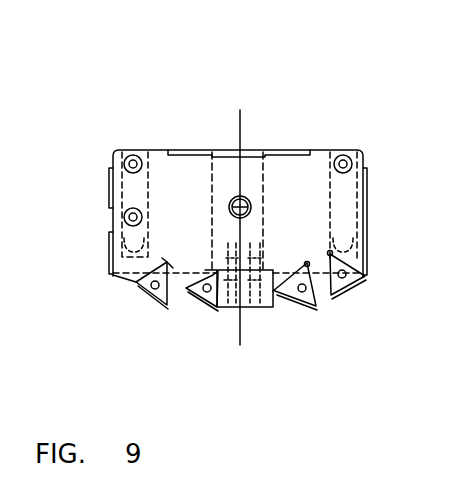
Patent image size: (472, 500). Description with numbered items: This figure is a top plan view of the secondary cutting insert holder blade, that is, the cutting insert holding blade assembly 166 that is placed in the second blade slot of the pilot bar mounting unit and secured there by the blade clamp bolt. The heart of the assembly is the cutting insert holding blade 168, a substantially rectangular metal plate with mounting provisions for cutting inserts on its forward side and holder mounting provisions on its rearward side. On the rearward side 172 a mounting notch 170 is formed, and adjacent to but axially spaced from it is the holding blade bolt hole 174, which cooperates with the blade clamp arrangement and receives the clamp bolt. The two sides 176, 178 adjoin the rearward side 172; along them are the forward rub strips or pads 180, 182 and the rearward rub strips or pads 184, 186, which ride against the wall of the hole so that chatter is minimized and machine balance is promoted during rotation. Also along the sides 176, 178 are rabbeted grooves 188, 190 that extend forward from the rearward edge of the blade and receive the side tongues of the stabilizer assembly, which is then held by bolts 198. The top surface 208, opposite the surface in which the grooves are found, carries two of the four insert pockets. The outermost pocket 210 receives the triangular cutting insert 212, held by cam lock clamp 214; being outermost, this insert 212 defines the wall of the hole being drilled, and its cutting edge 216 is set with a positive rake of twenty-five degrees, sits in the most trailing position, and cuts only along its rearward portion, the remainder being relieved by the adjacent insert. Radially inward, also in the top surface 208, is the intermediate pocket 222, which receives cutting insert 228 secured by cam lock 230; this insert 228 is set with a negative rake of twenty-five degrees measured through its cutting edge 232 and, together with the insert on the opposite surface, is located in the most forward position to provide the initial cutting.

The cutting insert holding blade assembly 166 is at (312, 183).
The cutting insert holding blade 168 is at (176, 226).
The mounting notch 170 is at (283, 160).
The rearward side 172 is at (335, 180).
The holding blade bolt hole 174 is at (240, 200).
The side 176 is at (113, 217).
The side 178 is at (367, 229).
The forward rub strip 180 is at (113, 262).
The forward rub strip 182 is at (367, 258).
The rearward rub strip 184 is at (135, 192).
The rearward rub strip 186 is at (367, 191).
The rabbeted groove 188 is at (119, 156).
The rabbeted groove 190 is at (363, 167).
The bolt 198 is at (128, 153).
The top surface 208 is at (189, 178).
The outermost pocket 210 is at (346, 290).
The cutting insert 212 is at (340, 292).
The cam lock clamp 214 is at (346, 290).
The cutting edge 216 is at (363, 283).
The intermediate pocket 222 is at (310, 304).
The cutting insert 228 is at (297, 297).
The cam lock 230 is at (300, 298).
The cutting edge 232 is at (293, 295).